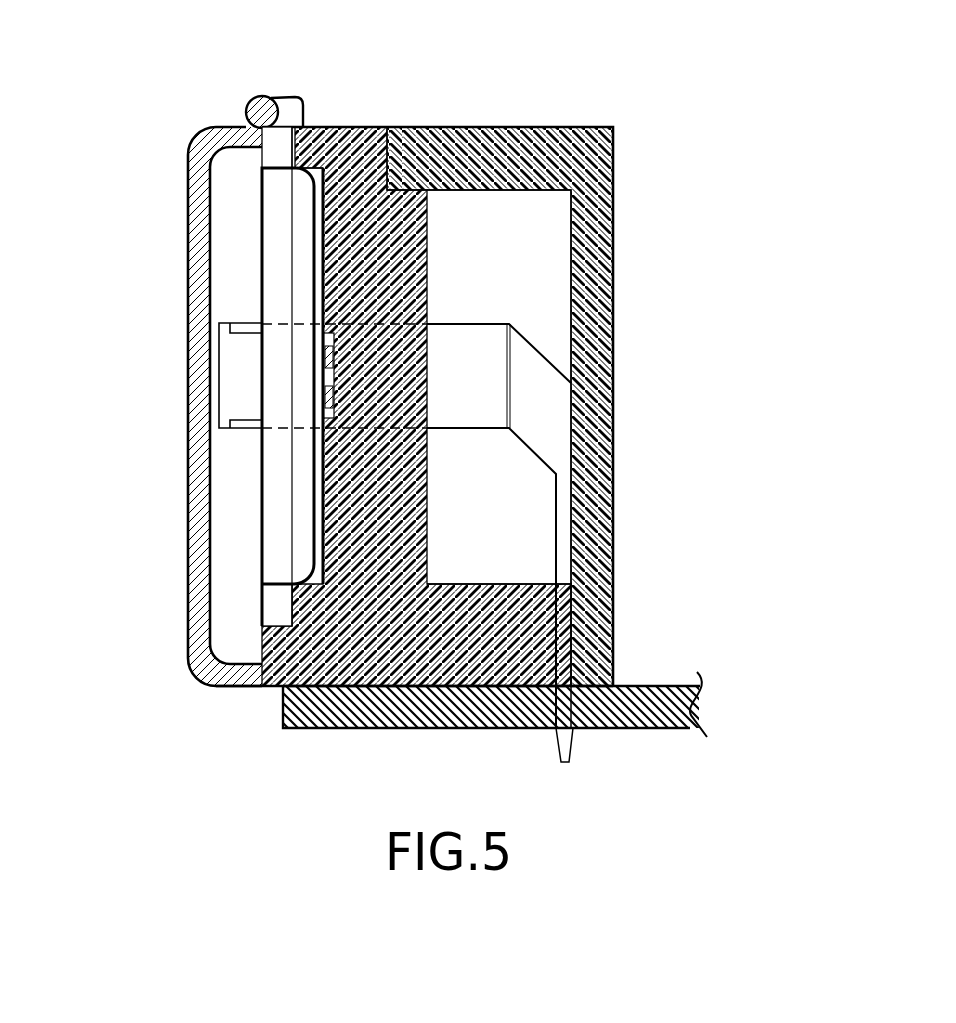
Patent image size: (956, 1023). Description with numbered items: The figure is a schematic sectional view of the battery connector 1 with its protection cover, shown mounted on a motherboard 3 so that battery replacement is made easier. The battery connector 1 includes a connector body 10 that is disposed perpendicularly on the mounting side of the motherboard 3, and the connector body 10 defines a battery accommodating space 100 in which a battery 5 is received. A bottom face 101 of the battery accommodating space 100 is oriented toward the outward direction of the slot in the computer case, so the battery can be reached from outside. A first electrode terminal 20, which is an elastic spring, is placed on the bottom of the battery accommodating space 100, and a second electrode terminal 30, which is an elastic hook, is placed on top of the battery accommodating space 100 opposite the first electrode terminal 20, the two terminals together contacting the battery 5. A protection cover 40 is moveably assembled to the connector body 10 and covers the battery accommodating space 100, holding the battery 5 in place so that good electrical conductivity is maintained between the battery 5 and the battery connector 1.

The battery connector 1 is at (500, 104).
The motherboard 3 is at (662, 692).
The battery 5 is at (272, 258).
The connector body 10 is at (305, 648).
The first electrode terminal 20 is at (325, 353).
The second electrode terminal 30 is at (237, 374).
The protection cover 40 is at (197, 426).
The battery accommodating space 100 is at (322, 166).
The bottom face 101 is at (318, 483).